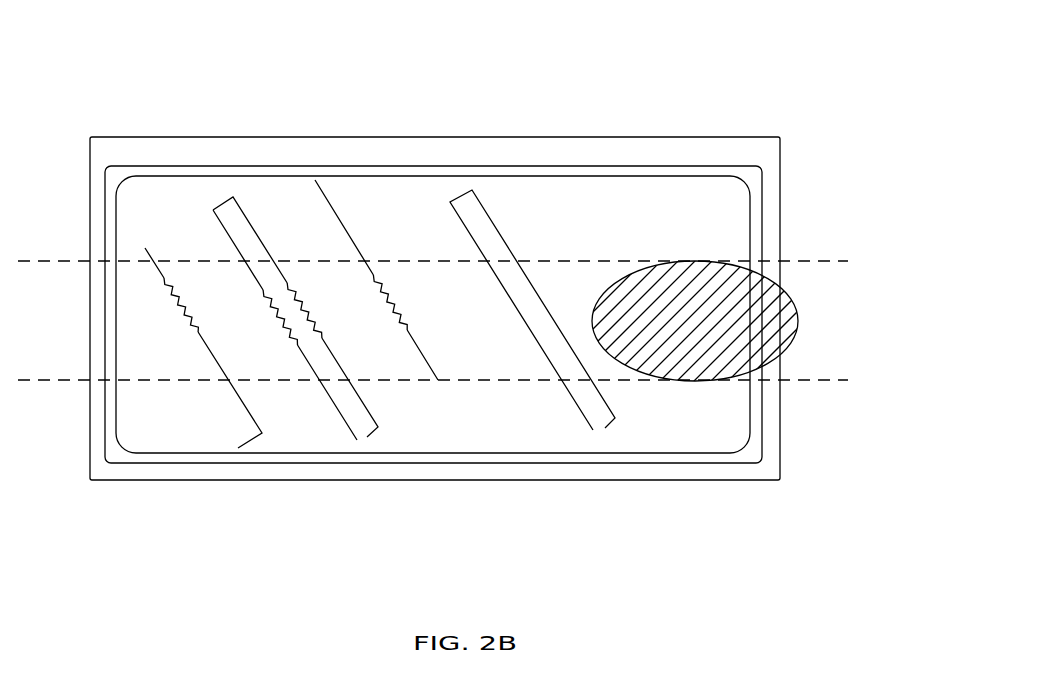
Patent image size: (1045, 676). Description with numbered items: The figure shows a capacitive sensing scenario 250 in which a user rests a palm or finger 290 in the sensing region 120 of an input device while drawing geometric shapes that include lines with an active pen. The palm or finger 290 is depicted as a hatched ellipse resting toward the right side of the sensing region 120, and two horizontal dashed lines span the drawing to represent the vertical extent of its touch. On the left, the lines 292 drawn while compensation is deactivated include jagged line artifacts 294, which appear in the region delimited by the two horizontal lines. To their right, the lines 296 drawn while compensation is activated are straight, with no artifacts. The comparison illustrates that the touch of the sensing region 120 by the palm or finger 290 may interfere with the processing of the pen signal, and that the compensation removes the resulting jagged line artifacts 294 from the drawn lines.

The capacitive sensing scenario 250 is at (636, 73).
The sensing region 120 is at (687, 121).
The lines 292 is at (470, 502).
The jagged line artifacts 294 is at (165, 278).
The lines 296 is at (498, 502).
The palm or finger 290 is at (728, 367).